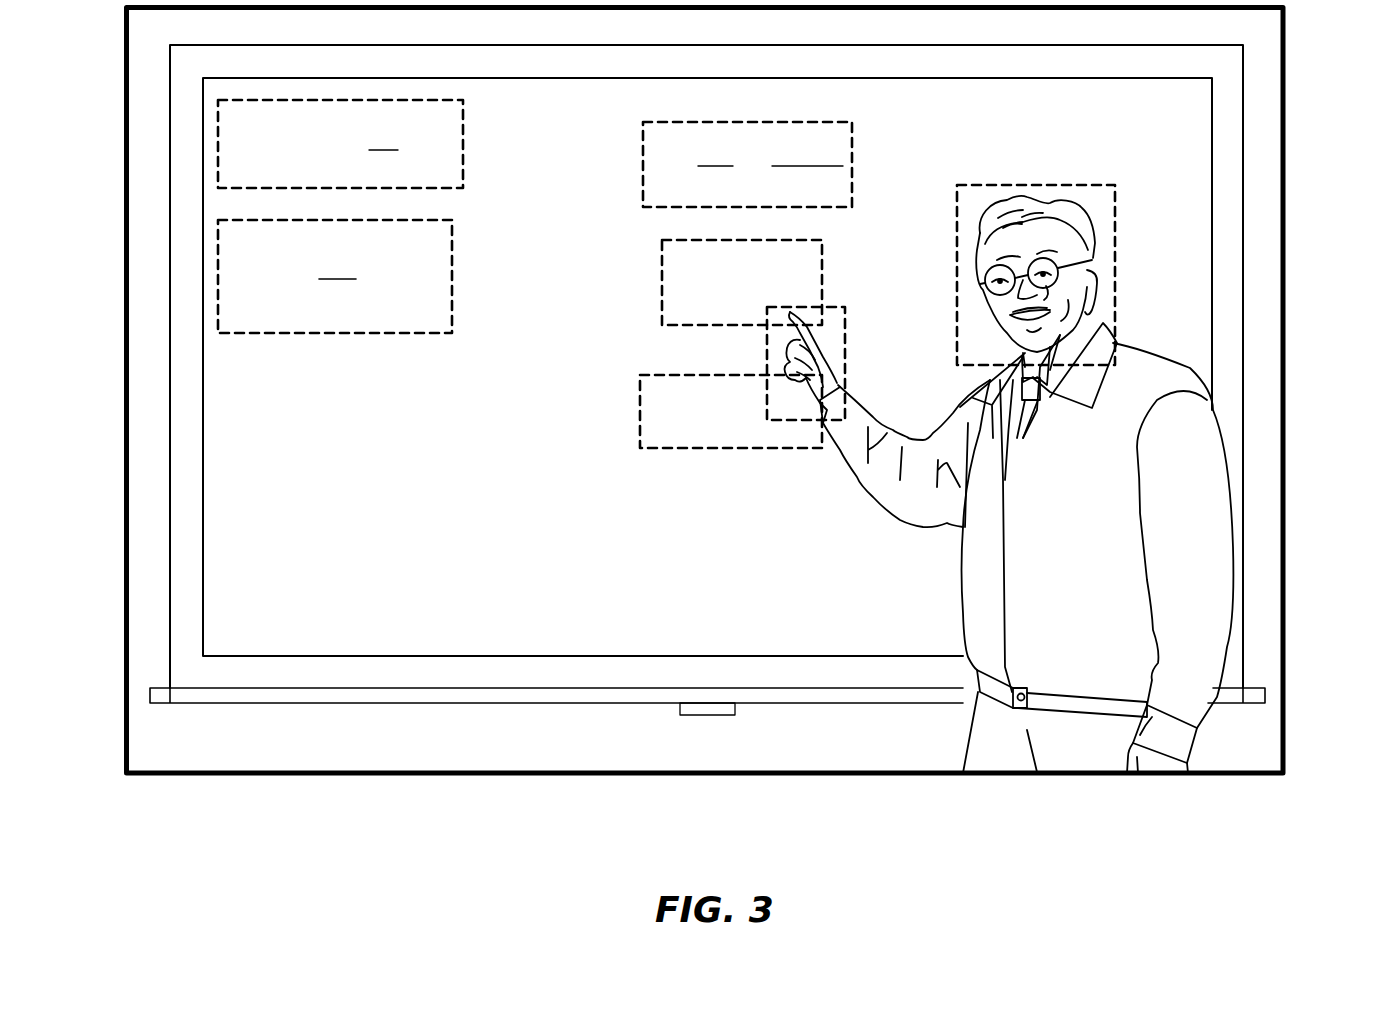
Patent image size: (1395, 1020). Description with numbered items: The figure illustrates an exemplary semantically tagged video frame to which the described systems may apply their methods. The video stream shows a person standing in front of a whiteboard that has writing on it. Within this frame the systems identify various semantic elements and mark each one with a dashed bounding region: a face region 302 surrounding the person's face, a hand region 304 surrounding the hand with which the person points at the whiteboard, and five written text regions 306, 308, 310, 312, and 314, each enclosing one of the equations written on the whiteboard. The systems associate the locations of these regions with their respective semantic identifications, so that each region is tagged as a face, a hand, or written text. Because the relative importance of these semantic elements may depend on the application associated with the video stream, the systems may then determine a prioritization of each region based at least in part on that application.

The face region 302 is at (1117, 230).
The hand region 304 is at (845, 323).
The written text region 306 is at (662, 275).
The written text region 308 is at (218, 120).
The written text region 310 is at (218, 250).
The written text region 312 is at (643, 160).
The written text region 314 is at (640, 395).